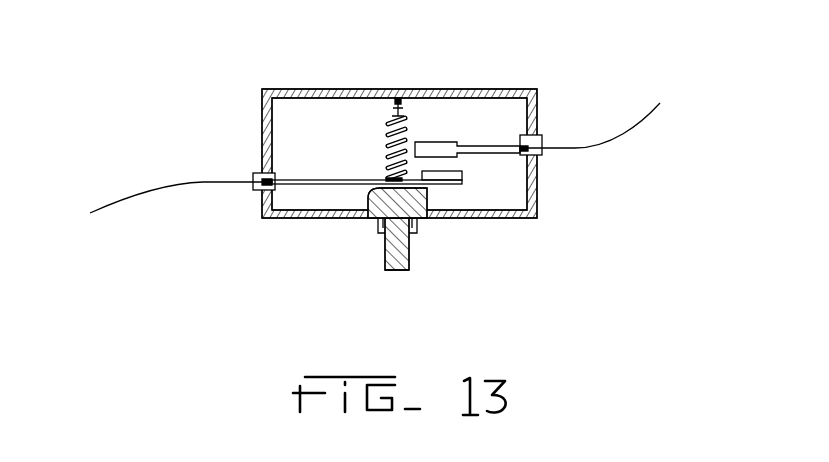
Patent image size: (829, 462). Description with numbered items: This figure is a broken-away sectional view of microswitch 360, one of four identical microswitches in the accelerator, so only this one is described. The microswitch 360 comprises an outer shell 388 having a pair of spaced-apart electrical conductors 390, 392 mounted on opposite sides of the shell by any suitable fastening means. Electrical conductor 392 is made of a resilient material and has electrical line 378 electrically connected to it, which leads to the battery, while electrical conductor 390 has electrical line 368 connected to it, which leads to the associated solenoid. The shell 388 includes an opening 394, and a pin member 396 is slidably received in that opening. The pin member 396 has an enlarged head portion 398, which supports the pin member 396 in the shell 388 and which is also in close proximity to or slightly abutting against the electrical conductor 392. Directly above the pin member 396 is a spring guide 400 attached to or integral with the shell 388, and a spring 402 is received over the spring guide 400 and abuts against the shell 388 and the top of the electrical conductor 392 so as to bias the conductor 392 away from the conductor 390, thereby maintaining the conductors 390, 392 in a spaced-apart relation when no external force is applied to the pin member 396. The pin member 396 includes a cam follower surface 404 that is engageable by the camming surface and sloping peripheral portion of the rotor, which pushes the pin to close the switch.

The microswitch 360 is at (394, 165).
The electrical line 368 is at (645, 115).
The electrical line 378 is at (140, 193).
The outer shell 388 is at (498, 88).
The electrical conductor 390 is at (430, 152).
The electrical conductor 392 is at (447, 180).
The opening 394 is at (392, 228).
The pin member 396 is at (406, 247).
The enlarged head portion 398 is at (329, 226).
The spring guide 400 is at (398, 97).
The spring 402 is at (390, 132).
The cam follower surface 404 is at (391, 272).